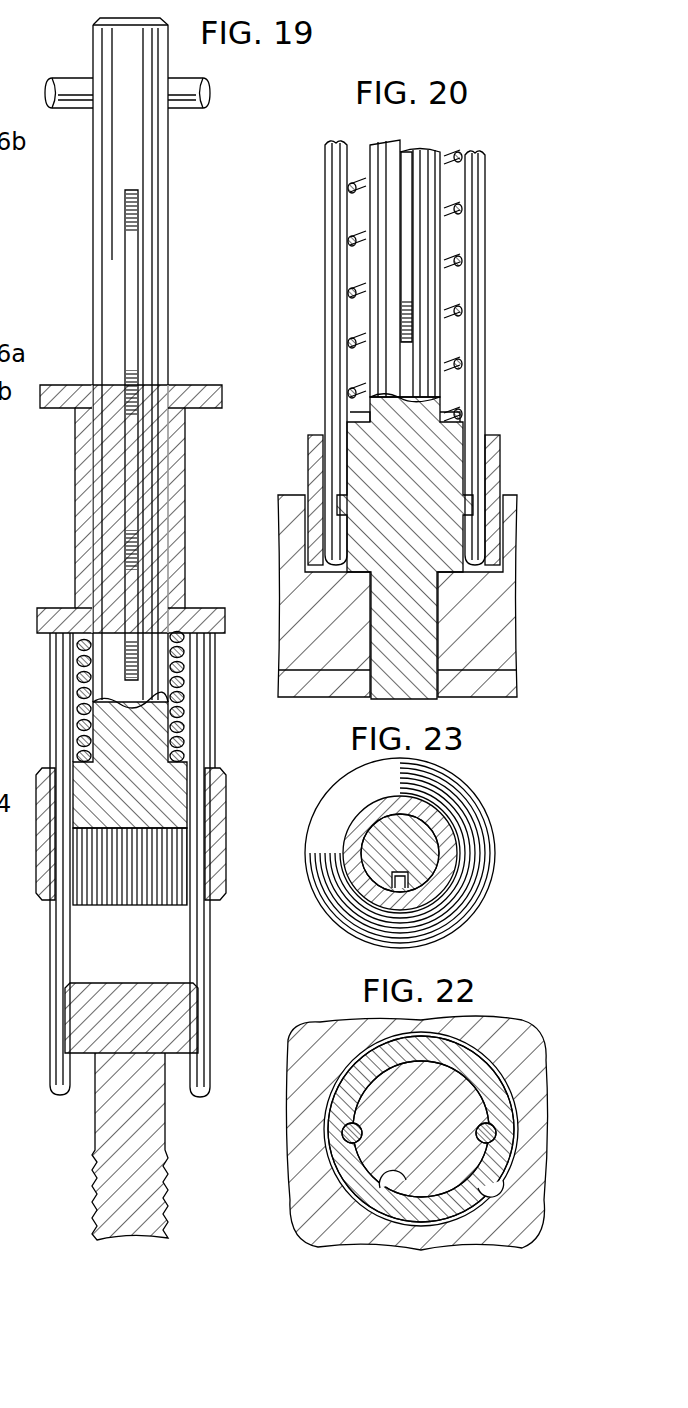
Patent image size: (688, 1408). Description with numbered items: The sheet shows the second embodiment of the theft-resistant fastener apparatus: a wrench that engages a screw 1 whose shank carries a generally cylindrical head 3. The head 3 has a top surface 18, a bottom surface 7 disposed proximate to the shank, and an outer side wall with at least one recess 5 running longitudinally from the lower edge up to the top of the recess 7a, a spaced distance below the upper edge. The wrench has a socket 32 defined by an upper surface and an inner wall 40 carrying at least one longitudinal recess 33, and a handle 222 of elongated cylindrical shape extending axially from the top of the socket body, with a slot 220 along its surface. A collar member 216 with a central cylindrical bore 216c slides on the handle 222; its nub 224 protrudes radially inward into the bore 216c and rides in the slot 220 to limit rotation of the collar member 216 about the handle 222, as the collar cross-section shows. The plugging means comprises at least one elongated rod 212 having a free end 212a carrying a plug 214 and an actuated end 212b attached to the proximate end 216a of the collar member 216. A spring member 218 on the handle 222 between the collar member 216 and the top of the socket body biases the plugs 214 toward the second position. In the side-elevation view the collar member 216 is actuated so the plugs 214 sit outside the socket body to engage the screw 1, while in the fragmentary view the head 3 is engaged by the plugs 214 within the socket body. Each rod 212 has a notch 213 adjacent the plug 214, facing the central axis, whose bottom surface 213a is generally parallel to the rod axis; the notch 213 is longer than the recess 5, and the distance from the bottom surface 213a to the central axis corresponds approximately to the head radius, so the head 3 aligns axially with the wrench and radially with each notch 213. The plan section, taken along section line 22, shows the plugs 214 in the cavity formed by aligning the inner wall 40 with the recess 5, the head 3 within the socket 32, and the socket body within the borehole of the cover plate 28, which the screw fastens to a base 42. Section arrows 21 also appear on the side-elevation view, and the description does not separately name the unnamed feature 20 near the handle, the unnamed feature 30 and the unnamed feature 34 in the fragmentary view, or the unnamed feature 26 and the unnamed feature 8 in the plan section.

In FIG. 20, the screw 1 is at (440, 702).
In FIG. 22, the generally cylindrical head 3 is at (520, 1222).
In FIG. 19, the recess 5 is at (68, 1032).
In FIG. 19, the bottom surface 7 is at (83, 1055).
In FIG. 19, the top of the recess 7a is at (73, 1000).
In FIG. 22, the piston section 8 is at (500, 1160).
In FIG. 19, the top surface 18 is at (130, 983).
In FIG. 20, the top surface 18 is at (345, 470).
In FIG. 19, the cross pin 20 is at (70, 80).
In FIG. 19, the section line 21 is at (13, 1030).
In FIG. 20, the section line 22— 22 is at (258, 553).
In FIG. 22, the sleeve ring 26 is at (502, 1060).
In FIG. 20, the cover plate 28 is at (493, 655).
In FIG. 22, the cover plate 28 is at (493, 1040).
In FIG. 20, the recess 30 is at (302, 492).
In FIG. 19, the socket 32 is at (133, 906).
In FIG. 22, the recess 33 is at (338, 1150).
In FIG. 19, the side block 34 is at (45, 755).
In FIG. 20, the side block 34 is at (320, 422).
In FIG. 22, the inner wall 40 is at (385, 1178).
In FIG. 20, the base 42 is at (440, 700).
In FIG. 19, the elongated rod 212 is at (55, 930).
In FIG. 20, the elongated rod 212 is at (330, 243).
In FIG. 19, the free end 212a is at (62, 1102).
In FIG. 19, the actuated end 212b is at (215, 625).
In FIG. 19, the notch 213 is at (187, 1058).
In FIG. 20, the notch 213 is at (466, 470).
In FIG. 20, the bottom surface of the notch 213a is at (345, 450).
In FIG. 19, the plug 214 is at (58, 1090).
In FIG. 22, the plug 214 is at (494, 1124).
In FIG. 19, the collar member 216 is at (75, 555).
In FIG. 23, the collar member 216 is at (447, 880).
In FIG. 23, the proximate end 216a is at (487, 905).
In FIG. 23, the central cylindrical bore 216c is at (375, 852).
In FIG. 19, the spring member 218 is at (80, 680).
In FIG. 20, the spring member 218 is at (452, 300).
In FIG. 19, the slot 220 is at (133, 257).
In FIG. 20, the slot 220 is at (418, 335).
In FIG. 23, the slot 220 is at (388, 884).
In FIG. 19, the handle 222 is at (172, 306).
In FIG. 20, the handle 222 is at (368, 258).
In FIG. 23, the handle 222 is at (418, 828).
In FIG. 23, the nub 224 is at (402, 888).